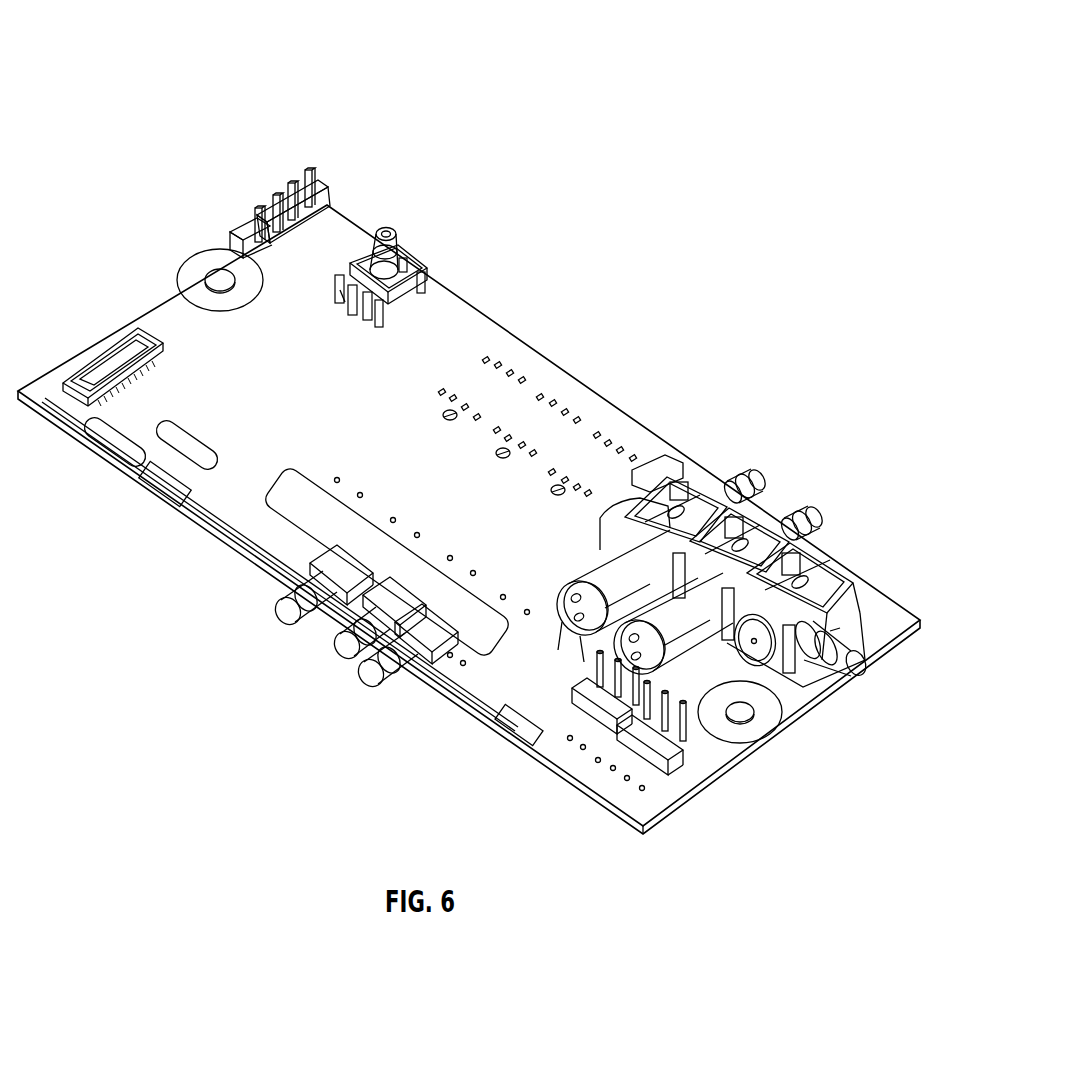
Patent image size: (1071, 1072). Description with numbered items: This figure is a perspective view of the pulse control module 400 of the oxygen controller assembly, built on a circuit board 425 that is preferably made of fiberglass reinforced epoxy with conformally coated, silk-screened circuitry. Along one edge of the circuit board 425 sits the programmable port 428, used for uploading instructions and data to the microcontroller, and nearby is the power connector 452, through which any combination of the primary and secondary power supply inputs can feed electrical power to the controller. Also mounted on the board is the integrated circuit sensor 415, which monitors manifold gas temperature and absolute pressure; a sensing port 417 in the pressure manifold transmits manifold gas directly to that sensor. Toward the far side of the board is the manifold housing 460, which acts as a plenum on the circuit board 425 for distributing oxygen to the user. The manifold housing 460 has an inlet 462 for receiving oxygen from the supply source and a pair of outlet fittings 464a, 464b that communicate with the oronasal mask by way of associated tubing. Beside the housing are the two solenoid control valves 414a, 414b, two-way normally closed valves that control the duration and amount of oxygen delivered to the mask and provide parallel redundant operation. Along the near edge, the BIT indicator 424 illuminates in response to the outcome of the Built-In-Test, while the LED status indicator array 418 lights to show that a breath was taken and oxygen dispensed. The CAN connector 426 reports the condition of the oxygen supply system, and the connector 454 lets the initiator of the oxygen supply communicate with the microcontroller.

The pulse control module 400 is at (650, 92).
The circuit board 425 is at (463, 337).
The programmable port 428 is at (95, 362).
The power connector 452 is at (310, 220).
The sensing port 417 is at (387, 232).
The integrated circuit sensor 415 is at (417, 258).
The BIT indicator 424 is at (280, 585).
The LED status indicator array 418 is at (340, 662).
The solenoid control valve 414a is at (612, 578).
The solenoid control valve 414b is at (680, 600).
The manifold housing 460 is at (817, 547).
The inlet 462 is at (857, 667).
The outlet fitting 464a is at (760, 478).
The outlet fitting 464b is at (810, 510).
The CAN connector 426 is at (587, 710).
The connector 454 is at (672, 747).